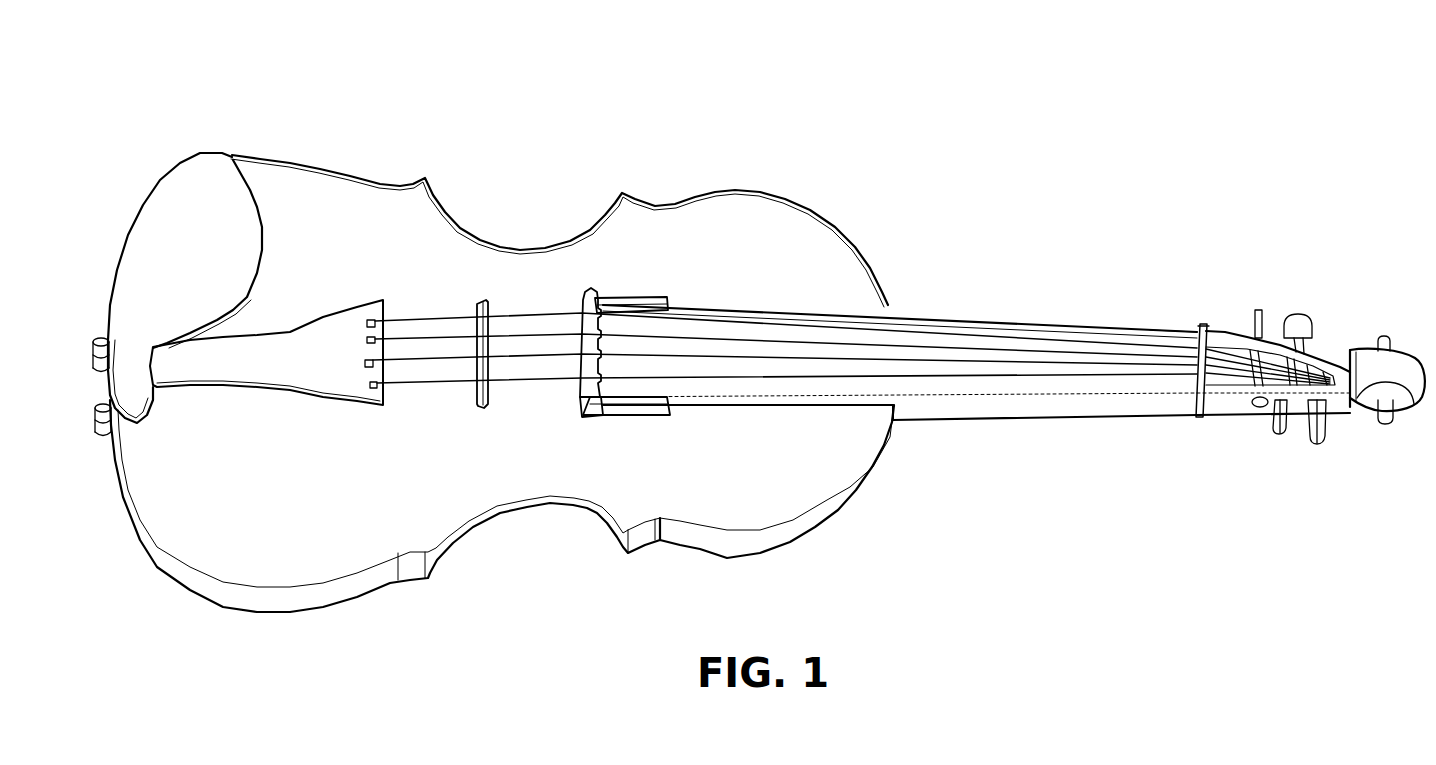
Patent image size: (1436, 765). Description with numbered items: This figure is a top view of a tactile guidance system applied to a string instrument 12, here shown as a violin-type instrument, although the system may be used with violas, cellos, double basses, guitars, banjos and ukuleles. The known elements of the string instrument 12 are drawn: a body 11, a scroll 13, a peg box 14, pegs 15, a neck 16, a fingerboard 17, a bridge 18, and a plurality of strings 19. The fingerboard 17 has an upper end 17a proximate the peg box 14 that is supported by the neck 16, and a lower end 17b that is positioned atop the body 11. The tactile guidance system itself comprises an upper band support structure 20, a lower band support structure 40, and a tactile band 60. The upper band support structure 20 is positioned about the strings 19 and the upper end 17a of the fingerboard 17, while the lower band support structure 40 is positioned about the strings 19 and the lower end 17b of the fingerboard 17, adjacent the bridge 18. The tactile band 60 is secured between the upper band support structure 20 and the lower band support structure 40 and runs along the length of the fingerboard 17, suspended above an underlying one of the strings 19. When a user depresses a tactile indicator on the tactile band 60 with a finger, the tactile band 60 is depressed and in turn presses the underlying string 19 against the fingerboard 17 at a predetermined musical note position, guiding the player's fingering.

The body 11 is at (597, 448).
The string instrument 12 is at (791, 192).
The scroll 13 is at (1400, 367).
The peg box 14 is at (1343, 373).
The pegs 15 is at (1327, 445).
The neck 16 is at (1223, 417).
The fingerboard 17 is at (857, 388).
The upper end 17a is at (1173, 331).
The lower end 17b is at (587, 400).
The bridge 18 is at (482, 302).
The strings 19 is at (815, 358).
The upper band support structure 20 is at (1203, 320).
The lower band support structure 40 is at (637, 295).
The tactile band 60 is at (1035, 338).